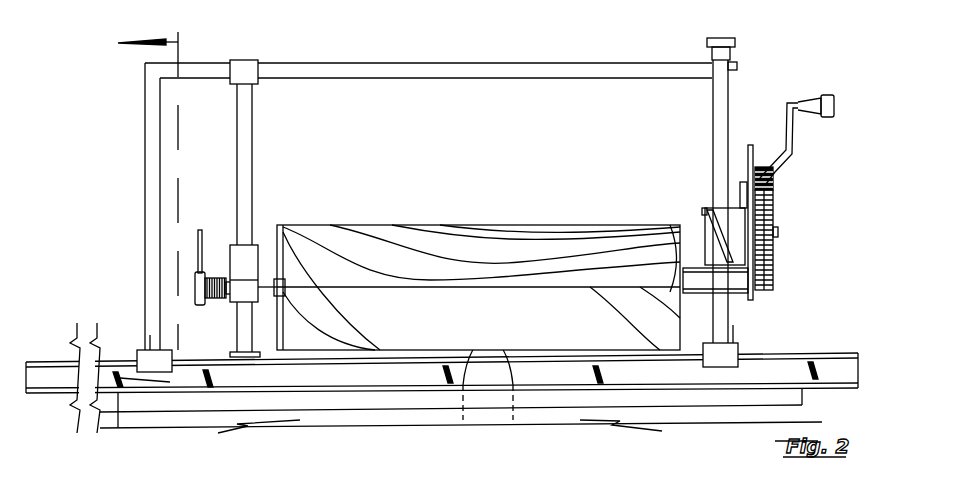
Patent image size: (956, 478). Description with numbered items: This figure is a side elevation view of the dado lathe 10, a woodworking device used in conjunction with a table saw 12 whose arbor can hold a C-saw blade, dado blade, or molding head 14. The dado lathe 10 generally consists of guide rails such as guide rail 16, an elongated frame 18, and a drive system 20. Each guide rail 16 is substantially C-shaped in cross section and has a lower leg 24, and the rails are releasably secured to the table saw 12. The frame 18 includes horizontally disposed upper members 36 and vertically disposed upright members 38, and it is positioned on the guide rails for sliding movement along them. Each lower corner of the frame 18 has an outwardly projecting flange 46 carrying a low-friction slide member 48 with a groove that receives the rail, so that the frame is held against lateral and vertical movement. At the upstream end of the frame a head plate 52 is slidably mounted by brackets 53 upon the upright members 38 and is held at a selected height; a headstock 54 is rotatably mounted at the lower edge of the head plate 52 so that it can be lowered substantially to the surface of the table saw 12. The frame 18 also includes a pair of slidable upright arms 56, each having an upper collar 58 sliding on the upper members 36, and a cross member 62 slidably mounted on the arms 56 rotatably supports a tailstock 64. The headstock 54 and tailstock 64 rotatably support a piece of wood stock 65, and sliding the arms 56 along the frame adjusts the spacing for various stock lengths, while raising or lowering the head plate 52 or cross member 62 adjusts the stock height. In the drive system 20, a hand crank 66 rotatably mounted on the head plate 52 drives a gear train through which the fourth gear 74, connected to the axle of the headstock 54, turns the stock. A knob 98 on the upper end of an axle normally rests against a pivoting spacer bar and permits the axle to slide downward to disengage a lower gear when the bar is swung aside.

The dado lathe 10 is at (388, 60).
The table saw 12 is at (450, 427).
The molding head 14 is at (478, 410).
The guide rail 16 is at (52, 358).
The frame 18 is at (405, 62).
The drive system 20 is at (744, 132).
The lower leg 24 is at (158, 205).
The upper member 36 is at (442, 70).
The upright member 38 is at (157, 160).
The flange 46 is at (145, 345).
The slide member 48 is at (147, 358).
The head plate 52 is at (752, 170).
The bracket 53 is at (733, 215).
The headstock 54 is at (706, 268).
The upright arm 56 is at (253, 178).
The upper collar 58 is at (244, 150).
The cross member 62 is at (243, 255).
The tailstock 64 is at (258, 250).
The wood stock 65 is at (352, 232).
The hand crank 66 is at (778, 98).
The fourth gear 74 is at (766, 290).
The knob 98 is at (726, 40).